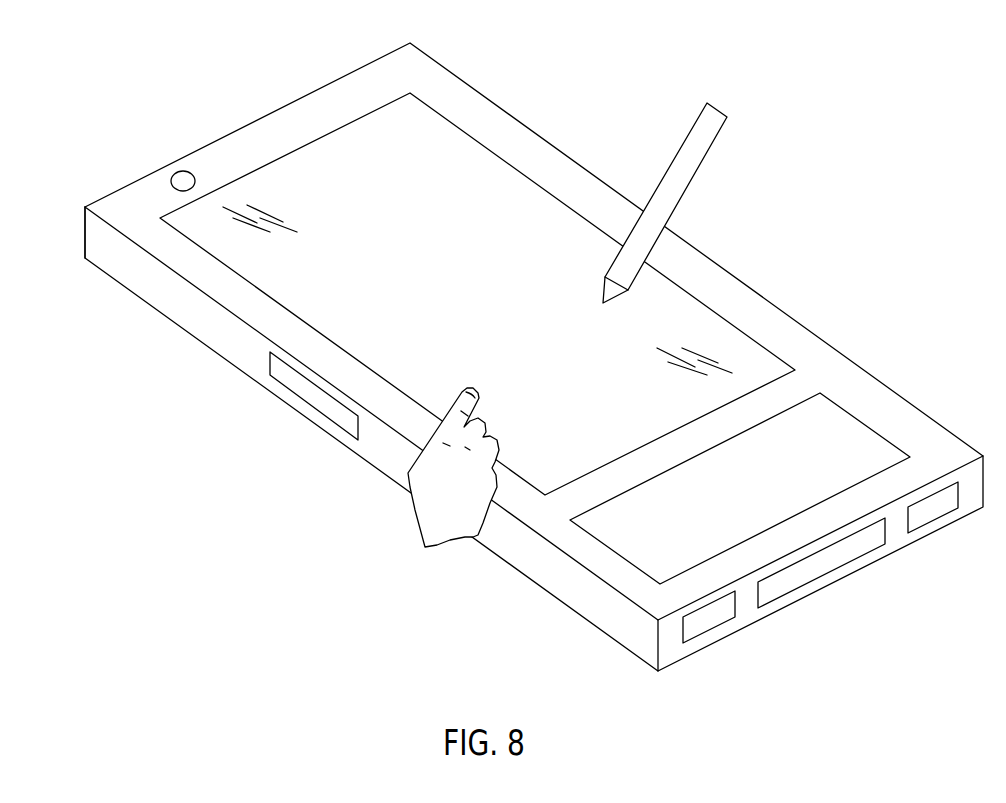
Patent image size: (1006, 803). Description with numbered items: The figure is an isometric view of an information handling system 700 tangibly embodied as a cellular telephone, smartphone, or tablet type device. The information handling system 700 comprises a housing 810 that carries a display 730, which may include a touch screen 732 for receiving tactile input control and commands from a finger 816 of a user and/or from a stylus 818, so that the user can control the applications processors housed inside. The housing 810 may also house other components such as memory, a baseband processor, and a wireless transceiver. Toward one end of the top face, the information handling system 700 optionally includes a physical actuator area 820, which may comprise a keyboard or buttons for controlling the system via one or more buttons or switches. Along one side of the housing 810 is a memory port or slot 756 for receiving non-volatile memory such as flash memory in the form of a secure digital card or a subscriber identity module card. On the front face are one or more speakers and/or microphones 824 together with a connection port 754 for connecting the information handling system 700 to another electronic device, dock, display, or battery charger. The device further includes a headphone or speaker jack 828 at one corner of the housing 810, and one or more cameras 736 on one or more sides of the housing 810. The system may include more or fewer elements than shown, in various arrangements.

The information handling system 700 is at (552, 72).
The housing 810 is at (348, 75).
The headphone or speaker jack 828 is at (110, 192).
The display 730 is at (410, 158).
The touch screen 732 is at (503, 300).
The camera 736 is at (175, 173).
The physical actuator area 820 is at (832, 443).
The memory port or slot 756 is at (283, 392).
The connection port 754 is at (833, 567).
The speakers and/or microphones 824 is at (710, 630).
The stylus 818 is at (686, 137).
The finger 816 is at (470, 388).